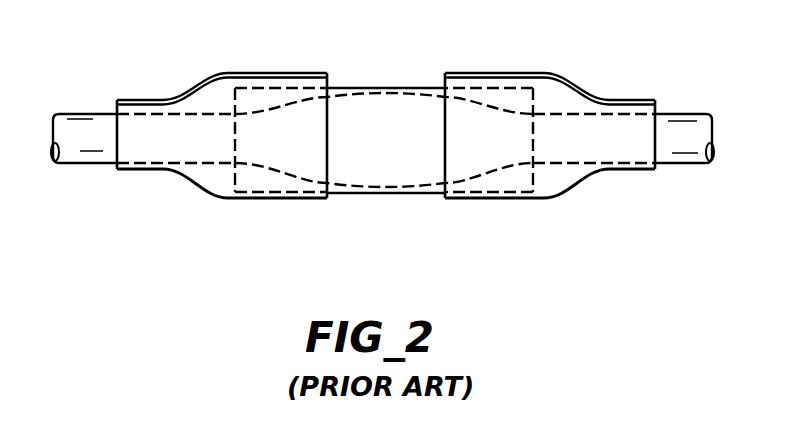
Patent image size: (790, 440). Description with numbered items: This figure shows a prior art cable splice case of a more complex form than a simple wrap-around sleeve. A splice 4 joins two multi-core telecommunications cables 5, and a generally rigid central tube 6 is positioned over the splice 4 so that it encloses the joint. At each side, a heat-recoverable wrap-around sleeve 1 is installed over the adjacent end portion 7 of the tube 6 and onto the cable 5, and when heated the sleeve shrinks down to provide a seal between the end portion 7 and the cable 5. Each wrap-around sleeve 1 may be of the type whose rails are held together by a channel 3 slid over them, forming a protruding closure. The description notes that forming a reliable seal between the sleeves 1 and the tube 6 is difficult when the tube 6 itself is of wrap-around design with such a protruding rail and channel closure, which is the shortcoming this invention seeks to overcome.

The heat-recoverable wrap-around sleeve 1 is at (218, 200).
The channel 3 is at (144, 99).
The splice 4 is at (387, 160).
The multi-core telecommunications cables 5 is at (88, 145).
The central tube 6 is at (387, 88).
The end portion 7 is at (258, 88).